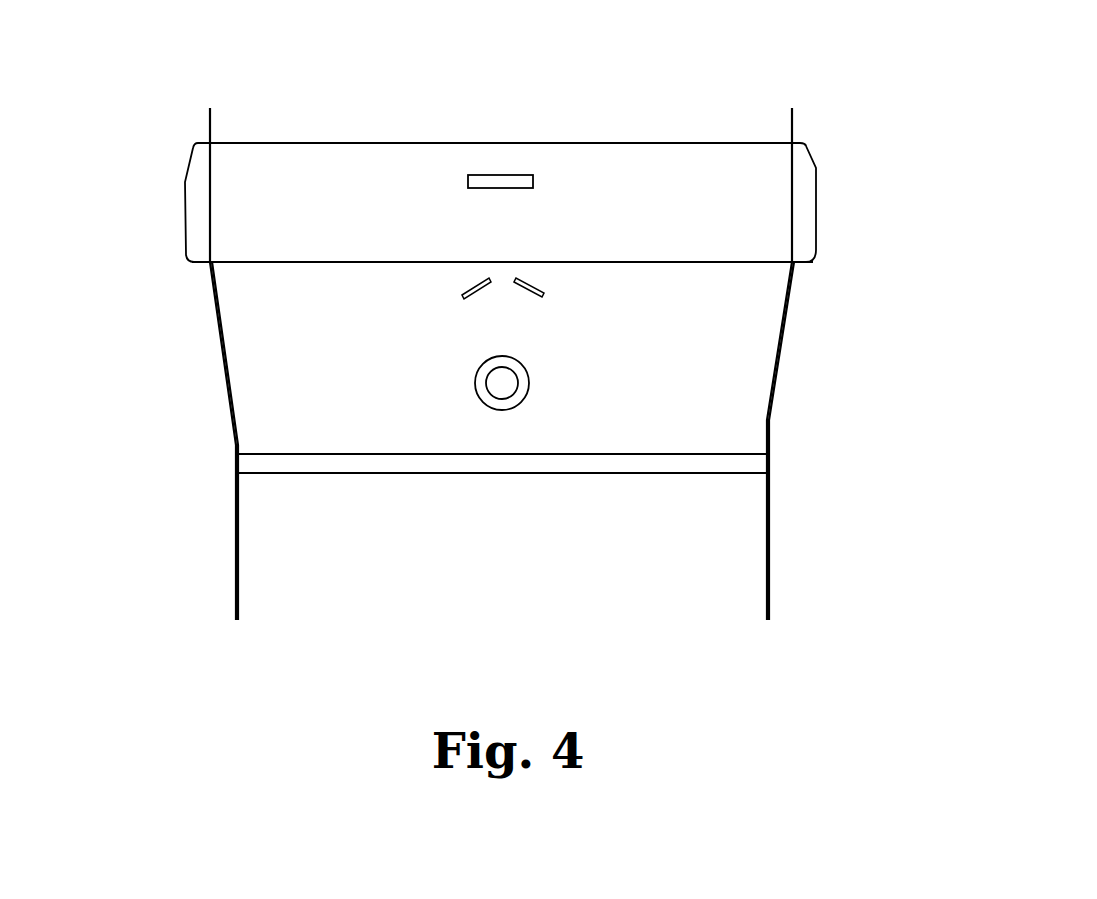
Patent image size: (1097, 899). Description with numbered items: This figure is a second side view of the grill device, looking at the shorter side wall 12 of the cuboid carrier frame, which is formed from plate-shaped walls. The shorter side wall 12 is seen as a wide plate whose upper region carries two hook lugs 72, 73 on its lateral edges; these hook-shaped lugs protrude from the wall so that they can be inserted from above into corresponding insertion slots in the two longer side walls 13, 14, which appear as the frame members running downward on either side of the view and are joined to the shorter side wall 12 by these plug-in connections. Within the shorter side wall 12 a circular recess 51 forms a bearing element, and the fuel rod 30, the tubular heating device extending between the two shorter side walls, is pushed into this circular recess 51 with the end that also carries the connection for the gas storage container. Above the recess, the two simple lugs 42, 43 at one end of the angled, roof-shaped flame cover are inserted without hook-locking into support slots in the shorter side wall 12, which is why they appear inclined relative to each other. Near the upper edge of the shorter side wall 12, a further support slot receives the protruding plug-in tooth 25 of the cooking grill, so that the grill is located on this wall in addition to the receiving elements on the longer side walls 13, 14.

The shorter side wall 12 is at (630, 157).
The longer side wall 13 is at (235, 531).
The longer side wall 14 is at (772, 553).
The plug-in tooth 25 is at (533, 182).
The fuel rod 30 is at (487, 391).
The lug 42 is at (470, 292).
The lug 43 is at (538, 287).
The circular recess 51 is at (480, 366).
The hook lug 72 is at (194, 181).
The hook lug 73 is at (806, 190).